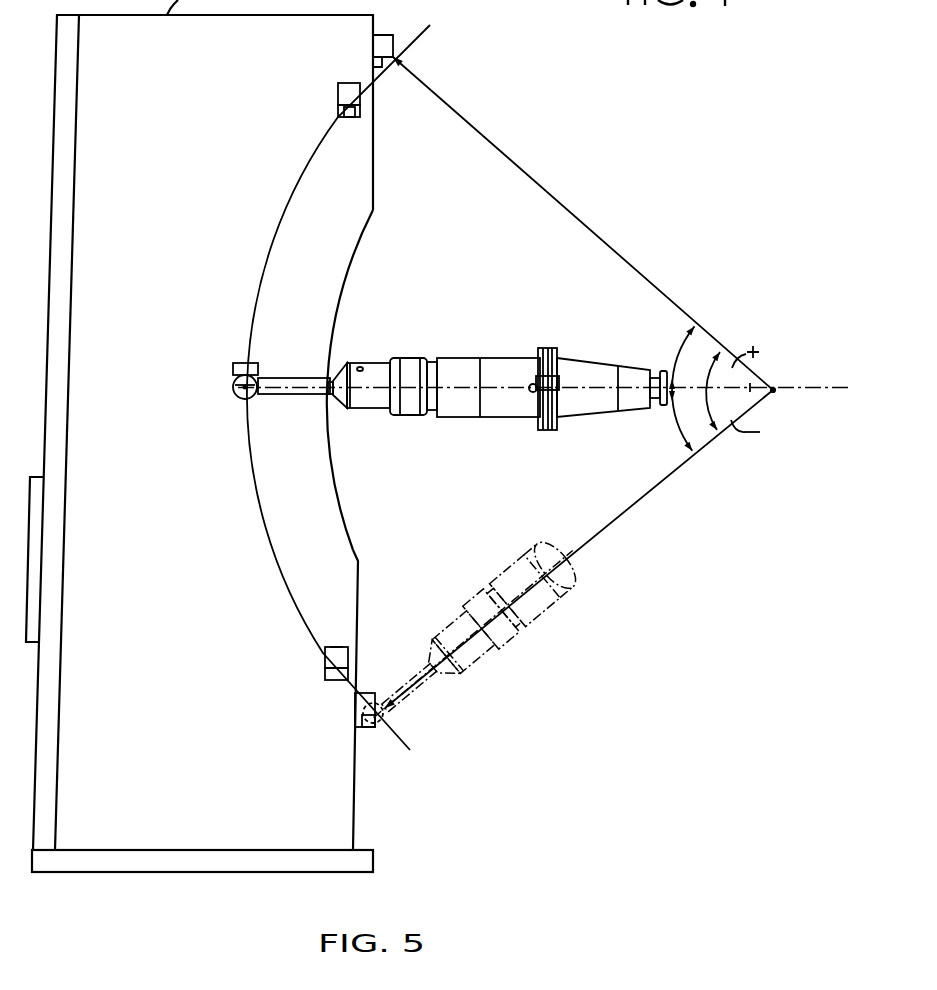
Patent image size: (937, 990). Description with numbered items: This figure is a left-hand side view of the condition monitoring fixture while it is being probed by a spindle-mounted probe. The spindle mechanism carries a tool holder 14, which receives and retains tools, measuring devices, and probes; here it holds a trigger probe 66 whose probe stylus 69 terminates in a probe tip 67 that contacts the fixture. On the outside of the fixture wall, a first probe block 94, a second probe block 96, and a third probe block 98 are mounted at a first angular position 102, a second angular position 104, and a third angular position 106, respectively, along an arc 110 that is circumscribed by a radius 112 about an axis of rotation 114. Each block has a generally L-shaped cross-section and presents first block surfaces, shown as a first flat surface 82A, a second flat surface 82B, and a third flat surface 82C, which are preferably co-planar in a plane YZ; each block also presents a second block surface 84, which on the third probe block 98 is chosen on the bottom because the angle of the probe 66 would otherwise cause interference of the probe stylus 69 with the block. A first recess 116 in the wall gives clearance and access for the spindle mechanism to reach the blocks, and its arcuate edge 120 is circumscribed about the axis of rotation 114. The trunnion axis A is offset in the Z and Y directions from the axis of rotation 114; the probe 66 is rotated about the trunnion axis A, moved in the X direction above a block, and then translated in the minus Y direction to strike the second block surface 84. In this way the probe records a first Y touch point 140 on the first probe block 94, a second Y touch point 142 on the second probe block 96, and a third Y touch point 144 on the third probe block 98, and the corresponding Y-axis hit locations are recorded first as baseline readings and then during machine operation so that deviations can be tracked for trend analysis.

The tool holder 14 is at (497, 548).
The trigger probe 66 is at (410, 697).
The probe tip 67 is at (372, 728).
The probe stylus 69 is at (282, 395).
The first flat surface 82A is at (325, 655).
The second flat surface 82B is at (233, 367).
The third flat surface 82C is at (338, 90).
The second block surface 84 is at (338, 108).
The first probe block 94 is at (325, 675).
The second probe block 96 is at (258, 368).
The third probe block 98 is at (363, 102).
The first angular position 102 is at (678, 358).
The second angular position 104 is at (762, 364).
The third angular position 106 is at (677, 423).
The arc 110 is at (280, 223).
The radius 112 is at (557, 200).
The axis of rotation 114 is at (778, 390).
The first recess 116 is at (342, 513).
The arcuate edge 120 is at (365, 380).
The first Y touch point 140 is at (337, 643).
The second Y touch point 142 is at (245, 388).
The third Y touch point 144 is at (349, 118).
The trunnion axis A is at (779, 395).